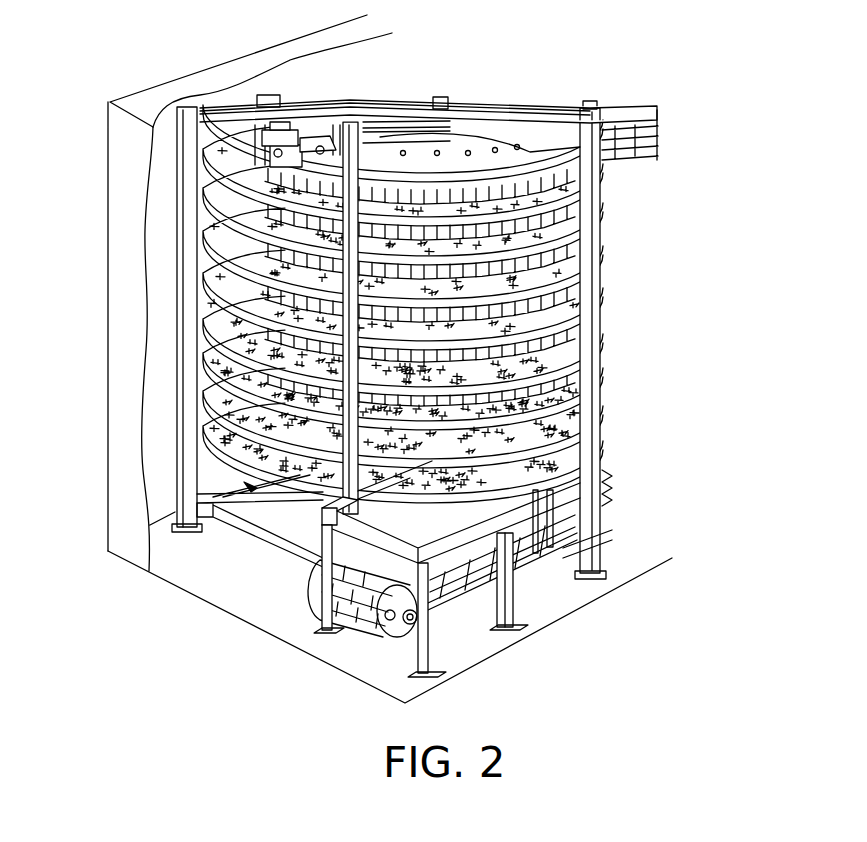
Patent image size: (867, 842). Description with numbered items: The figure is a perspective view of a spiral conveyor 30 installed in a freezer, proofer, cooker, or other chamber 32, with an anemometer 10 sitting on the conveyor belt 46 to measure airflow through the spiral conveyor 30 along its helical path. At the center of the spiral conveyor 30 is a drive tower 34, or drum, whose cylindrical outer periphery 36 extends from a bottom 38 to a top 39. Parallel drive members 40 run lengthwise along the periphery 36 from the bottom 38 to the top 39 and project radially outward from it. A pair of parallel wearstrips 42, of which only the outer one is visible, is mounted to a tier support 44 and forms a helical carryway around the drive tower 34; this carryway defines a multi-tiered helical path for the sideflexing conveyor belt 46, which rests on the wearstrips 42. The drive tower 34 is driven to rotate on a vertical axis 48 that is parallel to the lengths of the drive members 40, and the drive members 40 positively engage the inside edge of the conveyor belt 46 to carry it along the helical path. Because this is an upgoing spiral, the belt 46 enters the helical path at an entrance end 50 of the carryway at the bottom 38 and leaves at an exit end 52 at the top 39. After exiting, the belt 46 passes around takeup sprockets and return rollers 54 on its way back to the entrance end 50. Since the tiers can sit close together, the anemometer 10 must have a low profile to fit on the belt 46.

The anemometer 10 is at (545, 368).
The spiral conveyor 30 is at (604, 48).
The chamber 32 is at (107, 210).
The drive tower 34 is at (513, 147).
The cylindrical outer periphery 36 is at (500, 192).
The bottom 38 is at (197, 500).
The top 39 is at (277, 150).
The drive members 40 is at (323, 150).
The wearstrips 42 is at (565, 405).
The tier support 44 is at (660, 287).
The sideflexing conveyor belt 46 is at (203, 297).
The vertical axis 48 is at (415, 120).
The entrance end 50 is at (547, 505).
The exit end 52 is at (575, 148).
The return rollers 54 is at (385, 637).